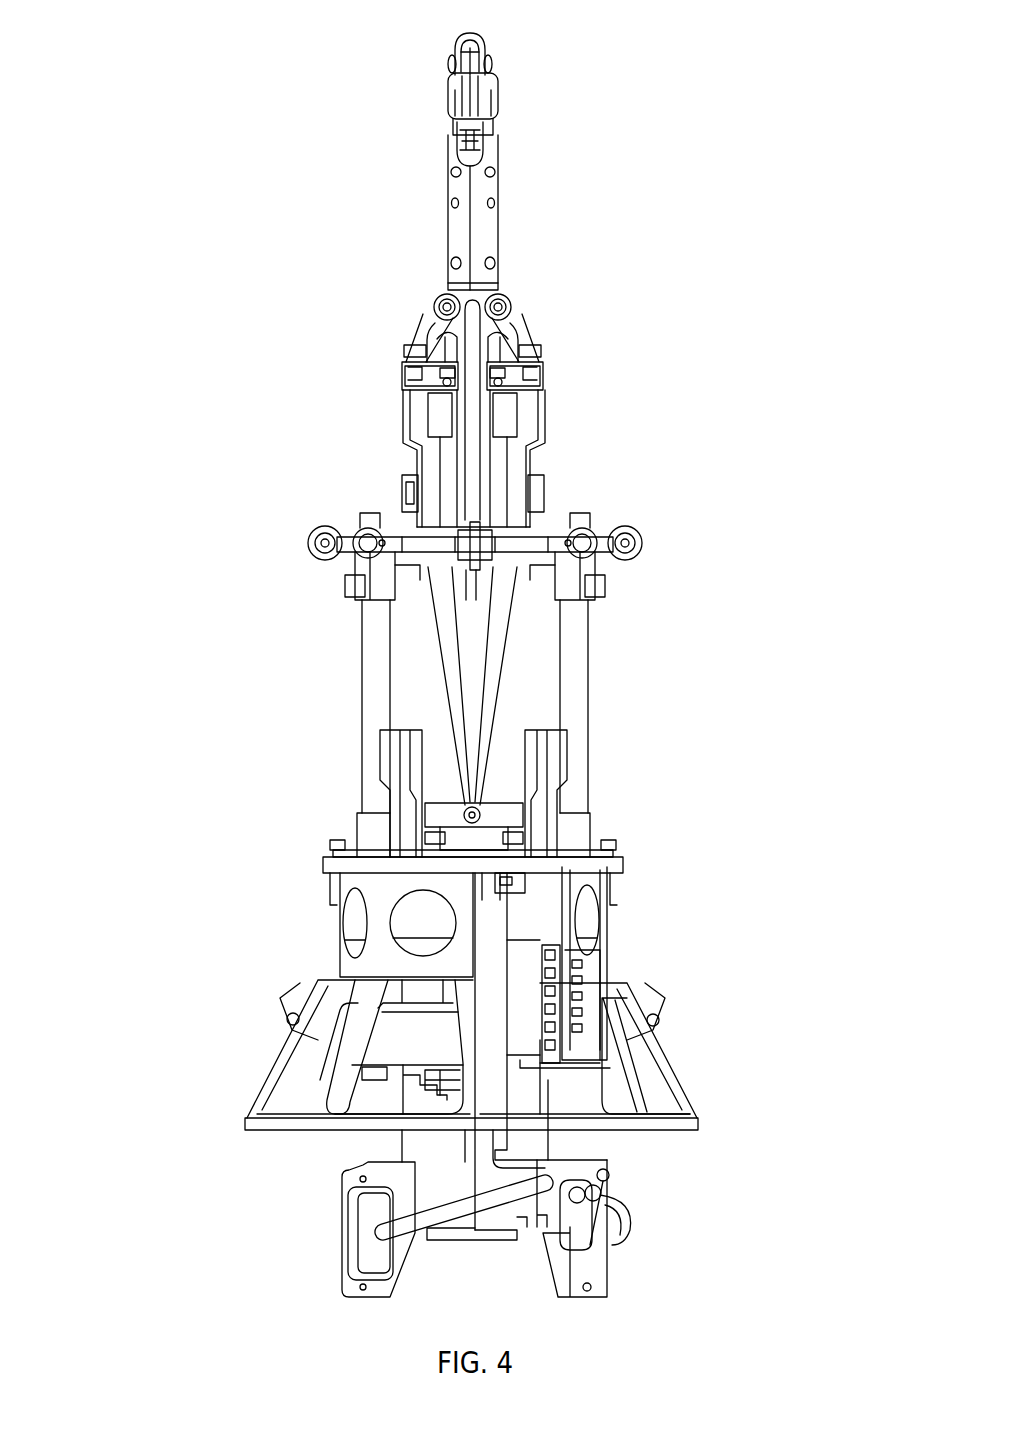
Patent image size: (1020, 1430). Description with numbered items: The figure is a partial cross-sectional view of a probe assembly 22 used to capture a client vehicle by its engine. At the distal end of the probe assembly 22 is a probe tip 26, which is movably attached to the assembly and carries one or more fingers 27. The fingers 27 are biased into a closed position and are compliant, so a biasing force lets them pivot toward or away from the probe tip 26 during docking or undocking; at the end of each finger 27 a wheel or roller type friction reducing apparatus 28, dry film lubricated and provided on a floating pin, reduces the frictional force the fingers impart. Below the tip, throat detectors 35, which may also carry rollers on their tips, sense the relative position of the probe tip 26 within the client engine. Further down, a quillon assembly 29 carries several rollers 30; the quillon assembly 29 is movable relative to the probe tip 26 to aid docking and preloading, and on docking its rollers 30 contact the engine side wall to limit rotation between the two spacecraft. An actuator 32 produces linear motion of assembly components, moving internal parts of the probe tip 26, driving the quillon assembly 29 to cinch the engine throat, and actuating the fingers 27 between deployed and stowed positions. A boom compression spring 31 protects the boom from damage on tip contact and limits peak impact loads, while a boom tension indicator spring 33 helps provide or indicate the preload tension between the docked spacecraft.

The probe assembly 22 is at (298, 692).
The probe tip 26 is at (325, 212).
The fingers 27 is at (406, 88).
The friction reducing apparatus 28 is at (450, 48).
The quillon assembly 29 is at (265, 515).
The rollers 30 is at (490, 520).
The boom compression spring 31 is at (612, 1027).
The actuator 32 is at (500, 990).
The boom tension indicator spring 33 is at (617, 1035).
The throat detectors 35 is at (534, 305).